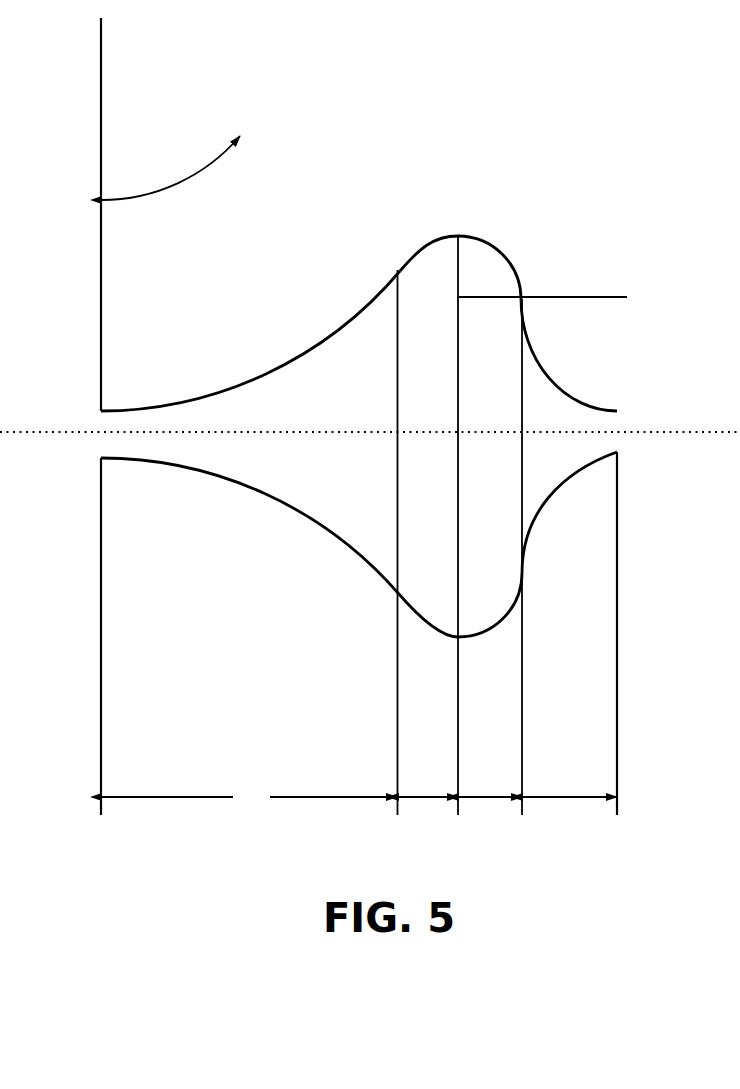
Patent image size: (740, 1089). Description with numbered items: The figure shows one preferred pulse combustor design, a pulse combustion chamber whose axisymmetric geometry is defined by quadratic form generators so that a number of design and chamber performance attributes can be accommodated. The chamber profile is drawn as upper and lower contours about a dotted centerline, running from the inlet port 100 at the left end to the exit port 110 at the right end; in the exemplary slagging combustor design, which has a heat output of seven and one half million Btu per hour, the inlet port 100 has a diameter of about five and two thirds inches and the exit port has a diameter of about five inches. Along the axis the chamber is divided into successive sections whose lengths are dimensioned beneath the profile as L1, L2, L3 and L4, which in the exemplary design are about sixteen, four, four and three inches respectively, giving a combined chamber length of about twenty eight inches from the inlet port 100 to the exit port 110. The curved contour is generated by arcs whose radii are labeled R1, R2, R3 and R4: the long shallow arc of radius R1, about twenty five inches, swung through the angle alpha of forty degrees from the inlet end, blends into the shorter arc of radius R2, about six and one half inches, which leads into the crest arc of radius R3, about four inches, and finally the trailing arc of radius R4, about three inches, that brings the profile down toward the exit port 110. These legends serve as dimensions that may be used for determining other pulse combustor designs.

The inlet port 100 is at (106, 433).
The outlet end of die profile 110 is at (618, 432).
The length R1 is at (101, 18).
The length R2 is at (458, 320).
The length R3 is at (505, 259).
The length R4 is at (618, 285).
The length L1 is at (249, 801).
The length L2 is at (416, 797).
The length L3 is at (481, 797).
The length L4 is at (562, 797).